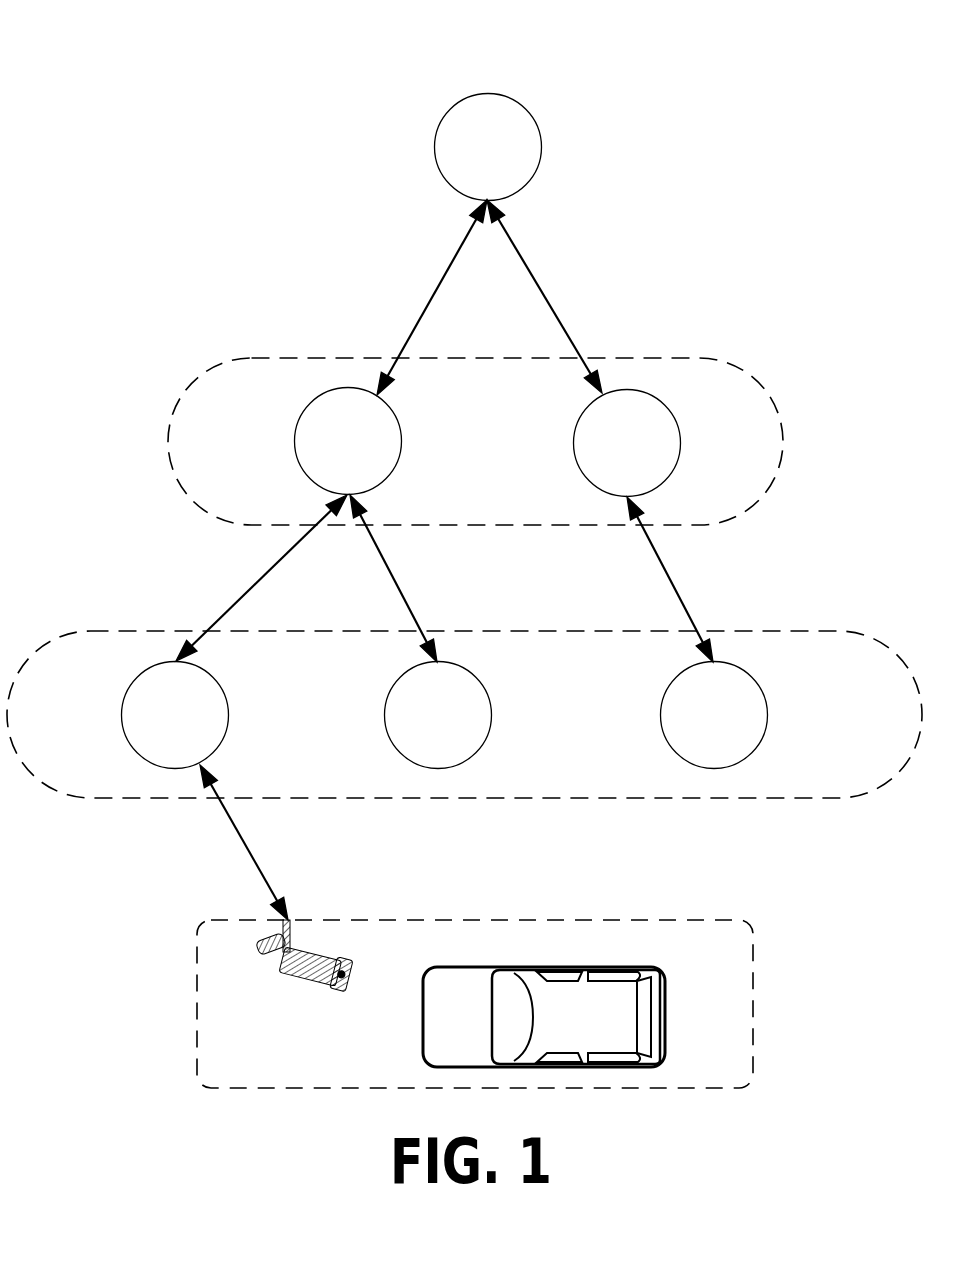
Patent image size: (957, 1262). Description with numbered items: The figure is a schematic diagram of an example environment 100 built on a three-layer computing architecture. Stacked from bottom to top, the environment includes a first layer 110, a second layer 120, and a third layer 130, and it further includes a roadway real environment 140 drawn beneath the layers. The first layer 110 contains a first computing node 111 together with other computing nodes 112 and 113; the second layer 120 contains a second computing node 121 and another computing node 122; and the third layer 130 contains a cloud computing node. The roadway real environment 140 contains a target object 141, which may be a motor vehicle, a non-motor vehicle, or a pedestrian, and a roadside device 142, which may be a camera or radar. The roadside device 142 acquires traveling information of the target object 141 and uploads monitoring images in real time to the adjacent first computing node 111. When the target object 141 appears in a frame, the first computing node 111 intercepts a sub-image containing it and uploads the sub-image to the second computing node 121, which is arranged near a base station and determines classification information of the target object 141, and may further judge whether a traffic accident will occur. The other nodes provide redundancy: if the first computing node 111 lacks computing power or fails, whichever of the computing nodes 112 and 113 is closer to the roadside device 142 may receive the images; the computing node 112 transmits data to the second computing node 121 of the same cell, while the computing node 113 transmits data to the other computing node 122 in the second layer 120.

The example environment 100 is at (152, 38).
The first layer 110 is at (133, 631).
The first computing node 111 is at (201, 732).
The computing node 112 is at (464, 732).
The computing node 113 is at (739, 732).
The second layer 120 is at (300, 358).
The second computing node 121 is at (374, 461).
The computing node 122 is at (654, 461).
The third layer 130 is at (514, 164).
The roadway real environment 140 is at (473, 920).
The target object 141 is at (525, 968).
The roadside device 142 is at (268, 930).